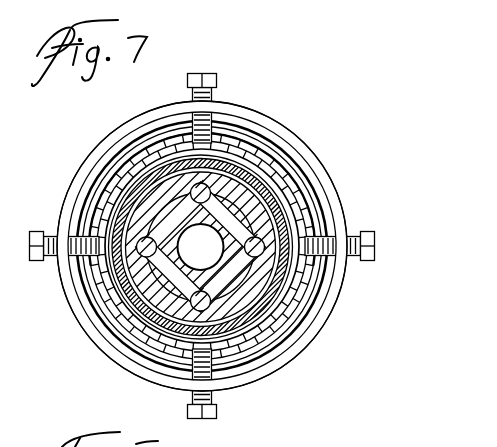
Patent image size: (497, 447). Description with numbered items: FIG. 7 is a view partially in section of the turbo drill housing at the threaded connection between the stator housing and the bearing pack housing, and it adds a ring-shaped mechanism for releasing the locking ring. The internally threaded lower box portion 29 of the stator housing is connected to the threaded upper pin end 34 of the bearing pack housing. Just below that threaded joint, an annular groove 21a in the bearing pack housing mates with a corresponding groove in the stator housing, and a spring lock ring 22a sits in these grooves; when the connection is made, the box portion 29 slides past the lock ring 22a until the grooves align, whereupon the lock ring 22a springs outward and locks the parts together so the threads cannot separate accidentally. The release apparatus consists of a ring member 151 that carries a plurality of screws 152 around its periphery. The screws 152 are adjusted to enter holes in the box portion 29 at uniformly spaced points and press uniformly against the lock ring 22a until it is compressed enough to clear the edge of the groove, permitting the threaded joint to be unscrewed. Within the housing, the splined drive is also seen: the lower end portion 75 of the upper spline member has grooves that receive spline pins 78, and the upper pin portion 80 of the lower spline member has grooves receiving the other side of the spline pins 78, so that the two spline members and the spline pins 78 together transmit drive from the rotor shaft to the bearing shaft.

The screws 152 is at (211, 245).
The threaded upper pin end 34 is at (261, 177).
The spline pins 78 is at (123, 281).
The box portion 29 is at (109, 314).
The upper pin portion 80 is at (219, 260).
The lower end portion 75 is at (262, 279).
The annular groove 21a is at (289, 317).
The ring member 151 is at (294, 344).
The spring lock ring 22a is at (265, 372).